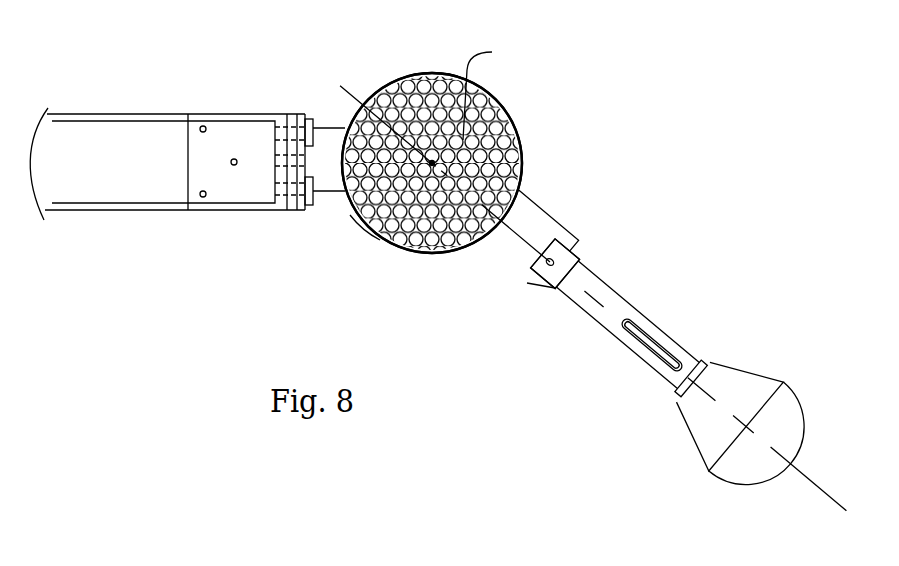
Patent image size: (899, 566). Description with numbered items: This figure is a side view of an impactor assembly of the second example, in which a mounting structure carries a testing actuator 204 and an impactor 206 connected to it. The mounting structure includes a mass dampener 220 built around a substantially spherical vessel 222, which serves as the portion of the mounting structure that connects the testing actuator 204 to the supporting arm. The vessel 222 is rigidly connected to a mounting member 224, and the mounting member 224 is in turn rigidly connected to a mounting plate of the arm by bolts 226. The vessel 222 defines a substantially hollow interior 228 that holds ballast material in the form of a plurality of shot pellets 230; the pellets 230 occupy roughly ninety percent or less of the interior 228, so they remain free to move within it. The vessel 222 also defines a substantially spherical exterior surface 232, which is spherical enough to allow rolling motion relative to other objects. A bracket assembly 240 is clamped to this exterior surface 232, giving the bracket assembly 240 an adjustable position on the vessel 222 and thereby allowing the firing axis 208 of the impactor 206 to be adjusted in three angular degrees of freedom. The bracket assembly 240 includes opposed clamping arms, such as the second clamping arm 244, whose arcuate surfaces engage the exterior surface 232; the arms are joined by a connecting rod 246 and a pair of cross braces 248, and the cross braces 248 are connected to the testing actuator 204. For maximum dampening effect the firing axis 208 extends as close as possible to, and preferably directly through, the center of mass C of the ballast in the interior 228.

The testing actuator 204 is at (657, 325).
The impactor 206 is at (729, 485).
The firing axis 208 is at (813, 488).
The mass dampener 220 is at (520, 95).
The substantially spherical vessel 222 is at (522, 141).
The mounting member 224 is at (299, 114).
The bolts 226 is at (437, 168).
The interior 228 is at (443, 78).
The shot pellets 230 is at (437, 256).
The substantially spherical exterior surface 232 is at (355, 222).
The bracket assembly 240 is at (588, 218).
The second clamping arm 244 is at (557, 218).
The connecting rod 246 is at (546, 258).
The cross braces 248 is at (580, 240).
The center of mass C is at (485, 88).